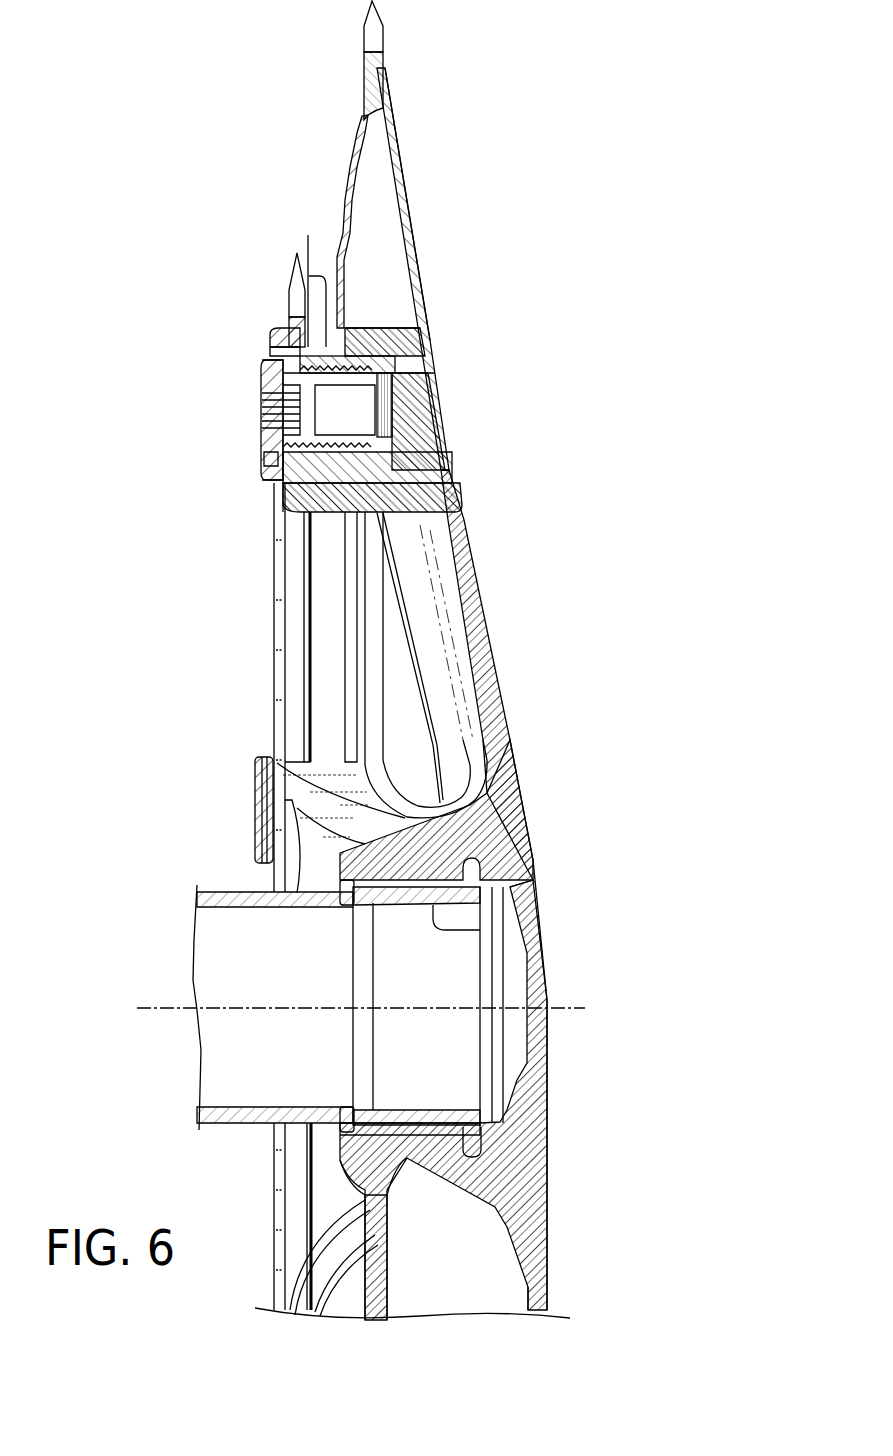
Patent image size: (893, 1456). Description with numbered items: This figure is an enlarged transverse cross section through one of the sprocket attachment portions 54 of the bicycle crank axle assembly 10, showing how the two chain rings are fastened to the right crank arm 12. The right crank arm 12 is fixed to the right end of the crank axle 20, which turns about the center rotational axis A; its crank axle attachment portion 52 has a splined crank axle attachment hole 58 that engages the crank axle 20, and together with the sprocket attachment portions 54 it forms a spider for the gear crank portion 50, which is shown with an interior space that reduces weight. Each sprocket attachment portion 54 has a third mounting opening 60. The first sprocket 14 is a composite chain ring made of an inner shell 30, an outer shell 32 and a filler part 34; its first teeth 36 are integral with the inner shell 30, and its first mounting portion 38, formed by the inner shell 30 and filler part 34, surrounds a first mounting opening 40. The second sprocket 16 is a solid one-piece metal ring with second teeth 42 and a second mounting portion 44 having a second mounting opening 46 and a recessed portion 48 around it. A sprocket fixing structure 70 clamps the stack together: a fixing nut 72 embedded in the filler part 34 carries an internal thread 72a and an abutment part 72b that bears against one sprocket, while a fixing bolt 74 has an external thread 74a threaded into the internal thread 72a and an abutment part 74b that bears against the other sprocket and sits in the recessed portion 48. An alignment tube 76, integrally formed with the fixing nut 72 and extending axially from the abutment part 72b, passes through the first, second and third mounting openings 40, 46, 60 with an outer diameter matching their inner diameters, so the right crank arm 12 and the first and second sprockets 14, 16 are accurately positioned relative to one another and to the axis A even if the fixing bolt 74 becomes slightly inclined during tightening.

The bicycle crank axle assembly 10 is at (142, 234).
The right crank arm 12 is at (487, 615).
The first sprocket 14 is at (414, 212).
The second sprocket 16 is at (273, 658).
The crank axle 20 is at (218, 887).
The inner shell 30 is at (348, 205).
The outer shell 32 is at (402, 162).
The filler part 34 is at (380, 328).
The first teeth 36 is at (385, 18).
The first mounting portion 38 is at (425, 340).
The first mounting opening 40 is at (392, 425).
The second teeth 42 is at (290, 283).
The second mounting portion 44 is at (282, 478).
The second mounting opening 46 is at (262, 396).
The recessed portion 48 is at (265, 457).
The gear crank portion 50 is at (548, 1253).
The crank axle attachment portion 52 is at (548, 992).
The sprocket attachment portion 54 is at (285, 322).
The crank axle attachment hole 58 is at (433, 918).
The third mounting opening 60 is at (262, 426).
The sprocket fixing structure 70 is at (245, 452).
The fixing nut 72 is at (400, 446).
The internal thread 72a is at (395, 396).
The abutment part 72b is at (296, 515).
The fixing bolt 74 is at (262, 380).
The external thread 74a is at (400, 372).
The abutment part 74b is at (270, 350).
The alignment tube 76 is at (322, 276).
The center rotational axis A is at (155, 1003).